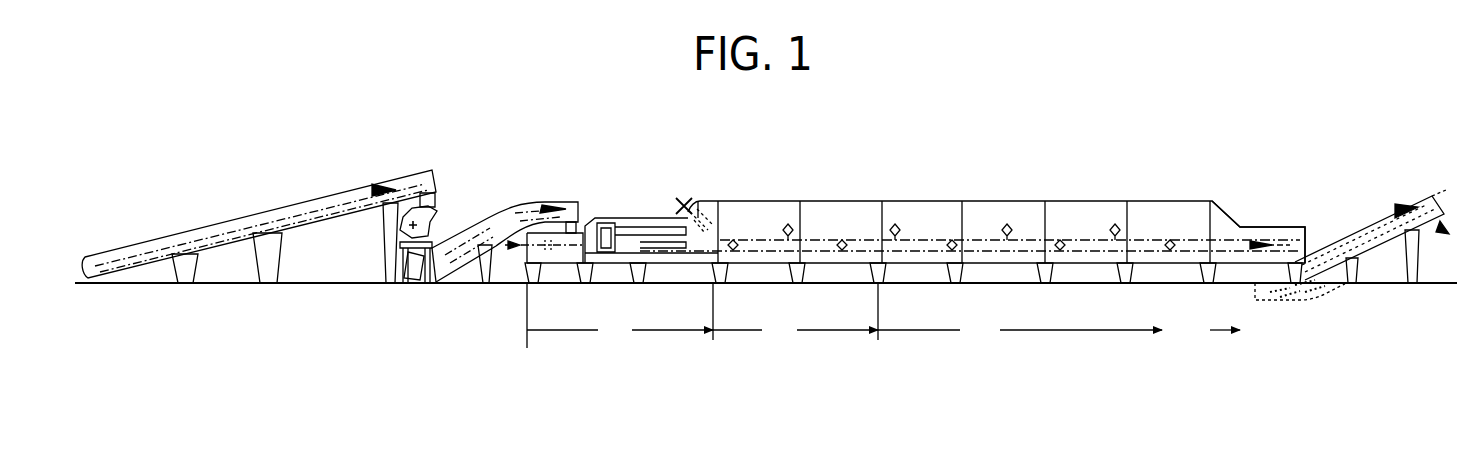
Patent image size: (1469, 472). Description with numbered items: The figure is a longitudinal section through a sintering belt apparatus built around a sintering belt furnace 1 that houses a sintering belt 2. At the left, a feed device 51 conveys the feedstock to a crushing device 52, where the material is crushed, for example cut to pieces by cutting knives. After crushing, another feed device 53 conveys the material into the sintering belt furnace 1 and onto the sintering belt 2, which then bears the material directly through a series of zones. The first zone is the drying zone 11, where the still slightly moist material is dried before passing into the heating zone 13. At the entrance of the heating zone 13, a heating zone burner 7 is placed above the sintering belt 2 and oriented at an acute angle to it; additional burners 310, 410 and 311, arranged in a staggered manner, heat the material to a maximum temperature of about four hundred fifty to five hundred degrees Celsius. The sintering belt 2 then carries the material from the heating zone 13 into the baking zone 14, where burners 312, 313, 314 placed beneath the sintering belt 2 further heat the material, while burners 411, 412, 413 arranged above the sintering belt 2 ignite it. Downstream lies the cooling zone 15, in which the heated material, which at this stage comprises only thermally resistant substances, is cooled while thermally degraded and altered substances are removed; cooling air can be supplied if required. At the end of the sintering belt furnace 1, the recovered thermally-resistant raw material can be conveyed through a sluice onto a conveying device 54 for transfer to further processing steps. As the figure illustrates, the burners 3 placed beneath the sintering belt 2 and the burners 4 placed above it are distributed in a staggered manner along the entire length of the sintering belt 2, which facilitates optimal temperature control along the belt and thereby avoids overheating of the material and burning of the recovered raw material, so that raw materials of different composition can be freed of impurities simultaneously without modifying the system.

The sintering belt furnace 1 is at (810, 201).
The sintering belt 2 is at (968, 240).
The burners beneath sintering belt 3 is at (1222, 312).
The burners above sintering belt 4 is at (1240, 197).
The heating zone burner 7 is at (687, 202).
The drying zone 11 is at (620, 315).
The heating zone 13 is at (795, 312).
The baking zone 14 is at (1020, 330).
The cooling zone 15 is at (1241, 330).
The feed device 51 is at (277, 207).
The crushing device 52 is at (437, 211).
The feed device 53 is at (553, 201).
The conveying device 54 is at (1372, 222).
The burner 310 is at (732, 250).
The burner 311 is at (841, 250).
The burner 312 is at (951, 250).
The burner 313 is at (1059, 250).
The burner 314 is at (1171, 250).
The burner 410 is at (786, 226).
The burner 411 is at (898, 226).
The burner 412 is at (1010, 226).
The burner 413 is at (1118, 226).